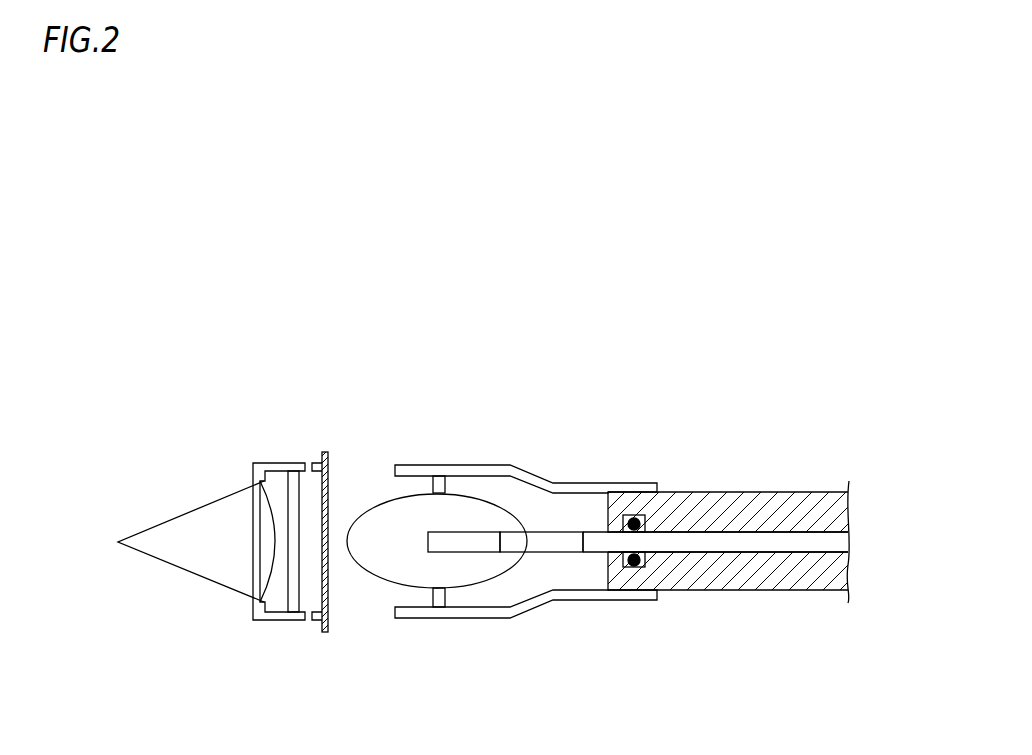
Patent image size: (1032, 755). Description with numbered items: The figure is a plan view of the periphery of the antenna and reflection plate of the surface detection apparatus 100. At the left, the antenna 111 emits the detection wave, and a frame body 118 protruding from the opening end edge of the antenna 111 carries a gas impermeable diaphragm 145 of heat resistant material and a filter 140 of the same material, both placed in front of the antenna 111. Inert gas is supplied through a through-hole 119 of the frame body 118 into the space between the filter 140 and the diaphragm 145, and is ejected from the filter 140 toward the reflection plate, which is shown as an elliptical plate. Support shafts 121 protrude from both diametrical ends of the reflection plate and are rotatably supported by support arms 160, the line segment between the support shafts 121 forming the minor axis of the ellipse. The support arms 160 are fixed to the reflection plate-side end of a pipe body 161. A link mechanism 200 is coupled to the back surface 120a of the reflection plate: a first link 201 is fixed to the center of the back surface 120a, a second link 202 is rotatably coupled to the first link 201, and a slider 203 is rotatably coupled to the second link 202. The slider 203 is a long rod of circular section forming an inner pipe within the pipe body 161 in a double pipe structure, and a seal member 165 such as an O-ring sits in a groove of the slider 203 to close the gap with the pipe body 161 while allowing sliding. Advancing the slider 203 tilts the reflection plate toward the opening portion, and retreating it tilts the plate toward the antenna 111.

The optical device 100 is at (832, 289).
The antenna 111 is at (175, 533).
The frame body 118 is at (270, 620).
The through-hole 119 is at (310, 621).
The back surface 120a is at (349, 540).
The support shaft 121 is at (402, 482).
The filter 140 is at (331, 470).
The diaphragm 145 is at (285, 477).
The support arm 160 is at (472, 465).
The pipe body 161 is at (818, 492).
The seal member 165 is at (644, 557).
The link mechanism 200 is at (737, 362).
The first link 201 is at (473, 532).
The second link 202 is at (551, 532).
The slider 203 is at (722, 541).